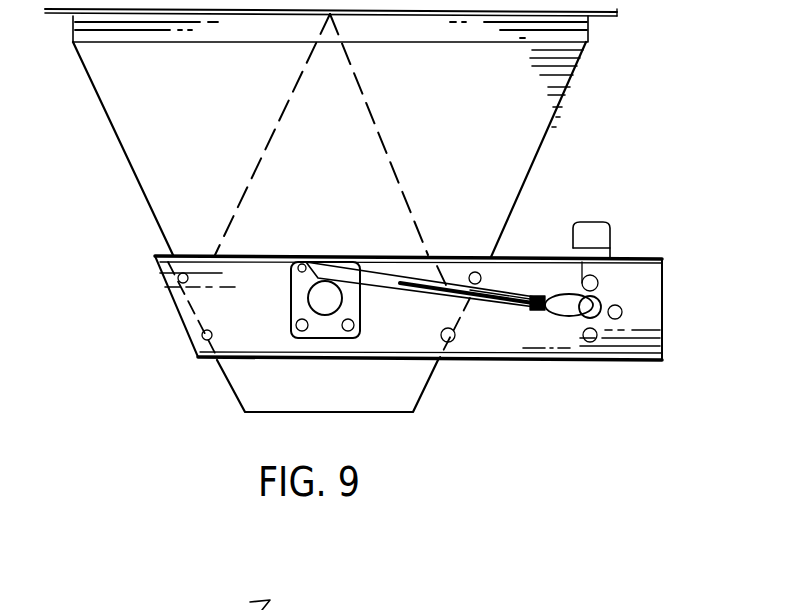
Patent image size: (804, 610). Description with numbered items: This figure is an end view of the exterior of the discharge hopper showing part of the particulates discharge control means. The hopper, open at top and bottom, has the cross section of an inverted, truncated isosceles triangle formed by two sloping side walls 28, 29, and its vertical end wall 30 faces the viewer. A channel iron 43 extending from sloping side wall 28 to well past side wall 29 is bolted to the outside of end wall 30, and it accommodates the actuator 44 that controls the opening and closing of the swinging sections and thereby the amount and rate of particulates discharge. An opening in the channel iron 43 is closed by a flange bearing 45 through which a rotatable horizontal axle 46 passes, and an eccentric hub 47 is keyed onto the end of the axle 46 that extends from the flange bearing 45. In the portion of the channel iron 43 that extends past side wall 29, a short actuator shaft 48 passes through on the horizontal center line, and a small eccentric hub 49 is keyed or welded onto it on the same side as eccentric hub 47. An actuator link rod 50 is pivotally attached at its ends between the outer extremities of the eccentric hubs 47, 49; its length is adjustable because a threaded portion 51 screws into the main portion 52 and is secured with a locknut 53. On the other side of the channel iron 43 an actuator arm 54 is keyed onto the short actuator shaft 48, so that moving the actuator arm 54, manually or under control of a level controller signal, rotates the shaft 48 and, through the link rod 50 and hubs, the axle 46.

The sloping side wall 28 is at (137, 185).
The sloping side wall 29 is at (540, 150).
The vertical end wall 30 is at (398, 402).
The channel iron 43 is at (528, 363).
The actuator 44 is at (524, 276).
The flange bearing 45 is at (230, 306).
The horizontal axle 46 is at (325, 297).
The eccentric hub 47 is at (292, 282).
The short actuator shaft 48 is at (605, 318).
The small eccentric hub 49 is at (578, 363).
The actuator link rod 50 is at (505, 295).
The threaded portion 51 is at (548, 292).
The main portion 52 is at (448, 282).
The locknut 53 is at (535, 295).
The actuator arm 54 is at (610, 250).